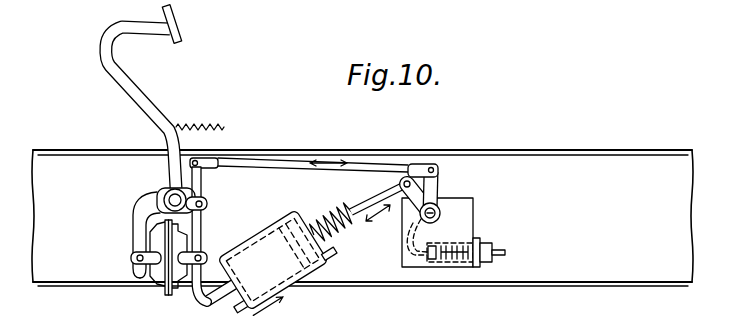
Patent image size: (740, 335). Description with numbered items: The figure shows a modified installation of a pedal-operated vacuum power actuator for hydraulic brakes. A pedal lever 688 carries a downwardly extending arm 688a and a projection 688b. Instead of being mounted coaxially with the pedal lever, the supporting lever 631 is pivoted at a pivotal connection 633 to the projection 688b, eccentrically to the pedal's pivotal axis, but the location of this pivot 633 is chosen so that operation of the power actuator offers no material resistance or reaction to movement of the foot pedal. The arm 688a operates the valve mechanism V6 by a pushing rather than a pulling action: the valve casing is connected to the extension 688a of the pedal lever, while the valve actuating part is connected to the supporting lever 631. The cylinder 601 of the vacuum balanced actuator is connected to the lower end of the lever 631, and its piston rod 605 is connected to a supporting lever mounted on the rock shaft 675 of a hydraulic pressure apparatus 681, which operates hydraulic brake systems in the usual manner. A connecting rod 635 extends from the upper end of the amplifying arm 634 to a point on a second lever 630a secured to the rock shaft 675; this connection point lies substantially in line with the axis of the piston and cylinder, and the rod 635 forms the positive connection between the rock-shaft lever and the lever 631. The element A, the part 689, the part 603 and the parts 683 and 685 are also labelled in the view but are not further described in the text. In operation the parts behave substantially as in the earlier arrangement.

The frame rail / band A is at (586, 152).
The pedal lever 688 is at (136, 100).
The return spring 689 is at (200, 117).
The downwardly extending arm 688a is at (133, 232).
The projection 688b is at (203, 204).
The pivotal connection 633 is at (205, 203).
The amplifying arm 634 is at (201, 185).
The connecting rod 635 is at (288, 159).
The supporting lever 631 is at (201, 234).
The valve mechanism V6 is at (163, 230).
The cylinder 601 is at (260, 243).
The port 603 is at (313, 286).
The piston rod 605 is at (368, 208).
The second lever 630a is at (434, 183).
The rock shaft 675 is at (440, 211).
The hydraulic pressure apparatus 681 is at (466, 223).
The switch 683 is at (430, 264).
The terminal 685 is at (506, 252).